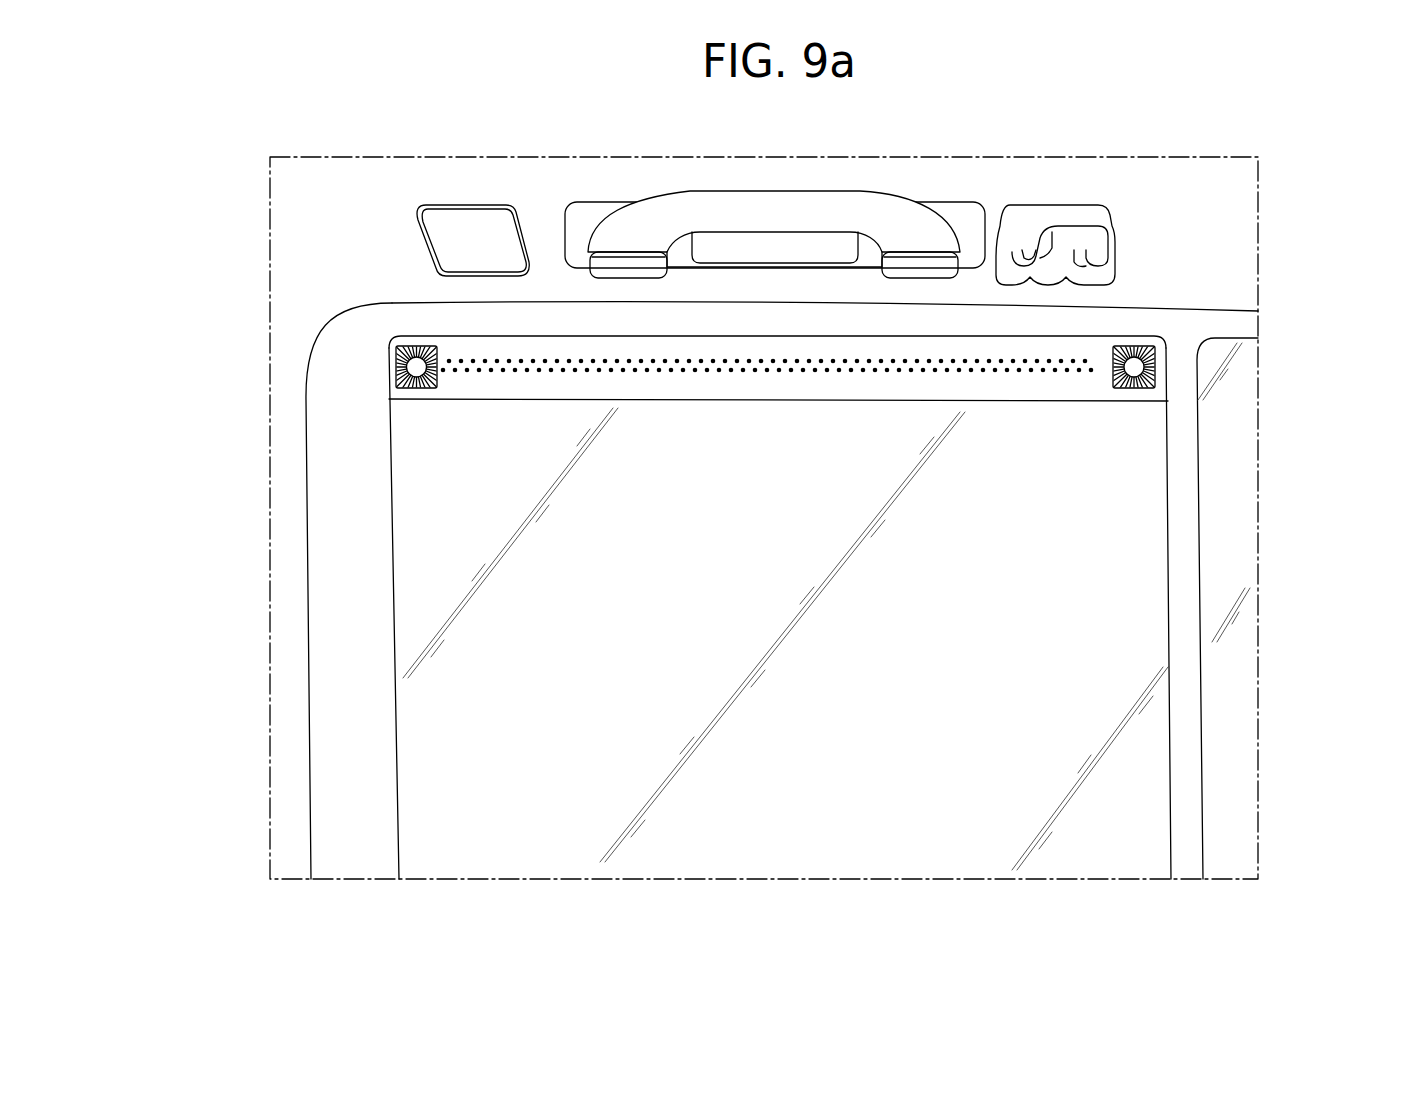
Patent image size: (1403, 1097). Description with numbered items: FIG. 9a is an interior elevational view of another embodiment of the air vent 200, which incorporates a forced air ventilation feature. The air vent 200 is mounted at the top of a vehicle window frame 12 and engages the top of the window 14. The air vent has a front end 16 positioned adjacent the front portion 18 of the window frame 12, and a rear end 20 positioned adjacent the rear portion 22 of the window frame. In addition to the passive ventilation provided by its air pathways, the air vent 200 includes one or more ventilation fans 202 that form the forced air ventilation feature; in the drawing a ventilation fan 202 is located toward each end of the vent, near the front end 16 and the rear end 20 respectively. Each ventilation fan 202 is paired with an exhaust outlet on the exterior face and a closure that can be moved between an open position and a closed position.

The window frame 12 is at (238, 733).
The window 14 is at (1080, 602).
The front end 16 is at (392, 370).
The front portion 18 is at (345, 532).
The rear end 20 is at (1163, 372).
The rear portion 22 is at (1185, 465).
The air vent 200 is at (1105, 333).
The ventilation fan 202 is at (413, 345).